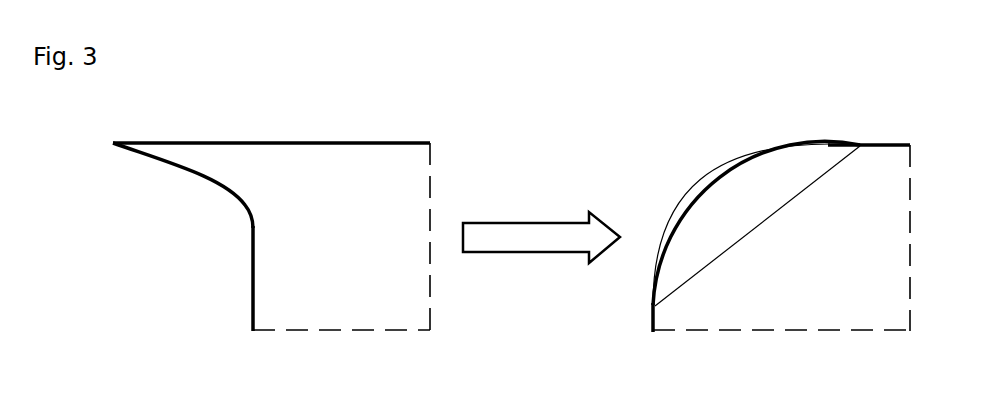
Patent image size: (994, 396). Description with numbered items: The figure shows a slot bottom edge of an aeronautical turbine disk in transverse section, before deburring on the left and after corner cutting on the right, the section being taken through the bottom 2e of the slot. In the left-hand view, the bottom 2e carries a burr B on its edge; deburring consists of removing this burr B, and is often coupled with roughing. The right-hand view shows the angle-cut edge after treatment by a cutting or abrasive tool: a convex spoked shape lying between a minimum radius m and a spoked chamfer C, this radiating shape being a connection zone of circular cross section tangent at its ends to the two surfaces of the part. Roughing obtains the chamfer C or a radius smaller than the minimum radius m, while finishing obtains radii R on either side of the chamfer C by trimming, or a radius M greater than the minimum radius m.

The slot bottom 2e is at (292, 142).
The burr B is at (227, 168).
The minimum radius m is at (682, 171).
The radius M is at (709, 196).
The spoked chamfer C is at (762, 232).
The radii R is at (655, 310).